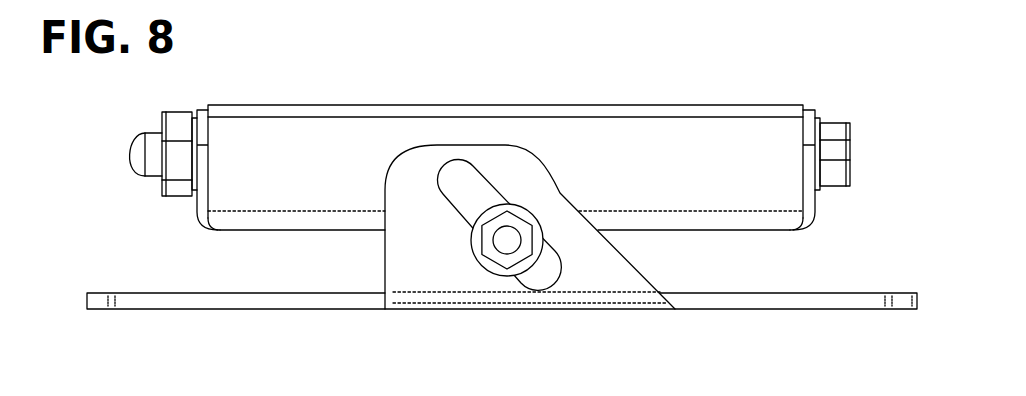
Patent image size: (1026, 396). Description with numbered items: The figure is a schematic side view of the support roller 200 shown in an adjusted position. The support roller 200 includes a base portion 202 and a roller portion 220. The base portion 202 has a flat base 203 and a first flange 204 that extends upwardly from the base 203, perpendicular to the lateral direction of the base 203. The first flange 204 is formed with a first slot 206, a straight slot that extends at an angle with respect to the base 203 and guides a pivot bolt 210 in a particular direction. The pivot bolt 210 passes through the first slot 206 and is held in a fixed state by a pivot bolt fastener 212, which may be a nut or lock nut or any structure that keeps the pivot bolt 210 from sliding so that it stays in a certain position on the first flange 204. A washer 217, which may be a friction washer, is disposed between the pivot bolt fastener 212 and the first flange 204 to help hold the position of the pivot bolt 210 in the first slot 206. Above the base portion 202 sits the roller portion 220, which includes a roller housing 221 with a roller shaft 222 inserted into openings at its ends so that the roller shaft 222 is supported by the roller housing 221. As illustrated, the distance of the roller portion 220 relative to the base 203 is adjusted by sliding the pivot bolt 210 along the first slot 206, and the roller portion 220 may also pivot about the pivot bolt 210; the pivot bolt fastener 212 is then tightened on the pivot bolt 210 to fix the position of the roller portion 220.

The support roller 200 is at (716, 70).
The base portion 202 is at (103, 268).
The base 203 is at (183, 302).
The first flange 204 is at (433, 268).
The first slot 206 is at (565, 268).
The pivot bolt 210 is at (500, 252).
The pivot bolt fastener 212 is at (475, 245).
The washer 217 is at (470, 240).
The roller portion 220 is at (103, 157).
The roller housing 221 is at (725, 176).
The roller shaft 222 is at (835, 147).